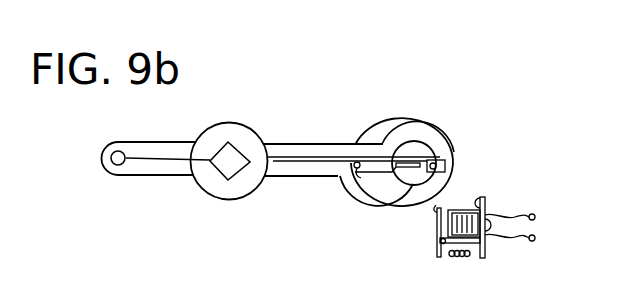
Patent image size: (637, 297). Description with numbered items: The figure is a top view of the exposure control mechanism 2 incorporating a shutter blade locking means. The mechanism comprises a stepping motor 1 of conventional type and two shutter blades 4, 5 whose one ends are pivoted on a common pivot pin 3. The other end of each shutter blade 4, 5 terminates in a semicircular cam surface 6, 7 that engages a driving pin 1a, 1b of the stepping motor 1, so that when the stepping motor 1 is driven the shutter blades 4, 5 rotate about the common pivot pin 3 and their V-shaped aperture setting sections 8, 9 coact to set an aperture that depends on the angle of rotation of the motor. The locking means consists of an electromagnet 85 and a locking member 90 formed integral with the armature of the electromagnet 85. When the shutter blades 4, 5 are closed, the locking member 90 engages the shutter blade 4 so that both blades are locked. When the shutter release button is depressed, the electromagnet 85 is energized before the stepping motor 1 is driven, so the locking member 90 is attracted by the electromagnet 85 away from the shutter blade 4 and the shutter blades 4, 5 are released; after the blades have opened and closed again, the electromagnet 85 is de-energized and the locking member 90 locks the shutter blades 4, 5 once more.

The stepping motor 1 is at (384, 119).
The driving pin 1a is at (347, 187).
The driving pin 1b is at (441, 160).
The exposure control mechanism 2 is at (464, 122).
The common pivot pin 3 is at (118, 165).
The shutter blade 4 is at (298, 177).
The shutter blade 5 is at (304, 143).
The semicircular cam surface 6 is at (371, 202).
The semicircular cam surface 7 is at (433, 139).
The V-shaped aperture setting section 8 is at (219, 171).
The V-shaped aperture setting section 9 is at (221, 144).
The electromagnet 85 is at (468, 210).
The locking member 90 is at (436, 210).